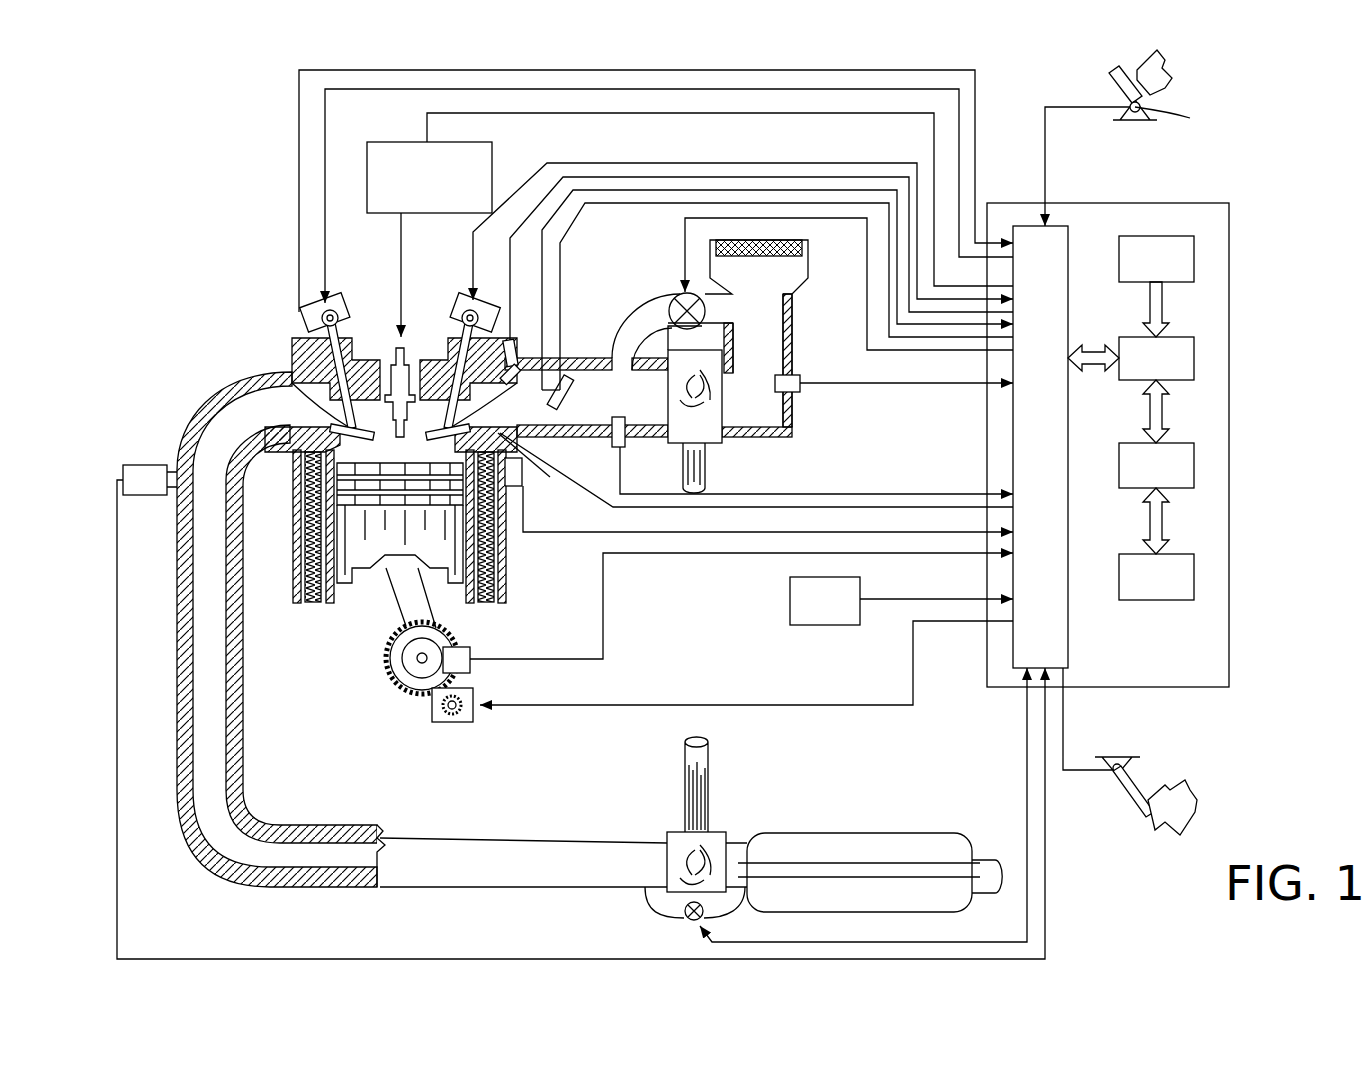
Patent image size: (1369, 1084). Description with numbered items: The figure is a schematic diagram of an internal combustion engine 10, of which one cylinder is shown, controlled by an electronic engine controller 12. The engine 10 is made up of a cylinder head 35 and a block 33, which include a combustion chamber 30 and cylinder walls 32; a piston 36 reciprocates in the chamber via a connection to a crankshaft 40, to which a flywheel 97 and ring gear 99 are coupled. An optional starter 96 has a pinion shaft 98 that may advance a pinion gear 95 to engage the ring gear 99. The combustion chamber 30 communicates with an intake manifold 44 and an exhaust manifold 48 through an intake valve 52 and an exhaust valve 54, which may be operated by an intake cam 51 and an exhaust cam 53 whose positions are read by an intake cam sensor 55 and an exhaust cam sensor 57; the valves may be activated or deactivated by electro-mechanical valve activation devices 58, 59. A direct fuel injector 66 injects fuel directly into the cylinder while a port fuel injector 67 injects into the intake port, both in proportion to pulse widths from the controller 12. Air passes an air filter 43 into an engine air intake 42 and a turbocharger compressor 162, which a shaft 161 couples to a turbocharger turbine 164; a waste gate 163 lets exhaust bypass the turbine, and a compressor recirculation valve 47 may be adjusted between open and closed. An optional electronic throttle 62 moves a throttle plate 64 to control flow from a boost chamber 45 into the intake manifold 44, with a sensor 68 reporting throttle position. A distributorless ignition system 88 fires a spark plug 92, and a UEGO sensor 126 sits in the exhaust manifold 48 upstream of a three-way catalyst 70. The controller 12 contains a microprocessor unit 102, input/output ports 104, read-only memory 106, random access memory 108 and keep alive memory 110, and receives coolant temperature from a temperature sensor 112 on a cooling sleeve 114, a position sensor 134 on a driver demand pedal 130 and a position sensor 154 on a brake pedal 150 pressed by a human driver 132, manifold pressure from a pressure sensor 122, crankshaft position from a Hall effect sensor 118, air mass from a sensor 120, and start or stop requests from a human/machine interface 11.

The internal combustion engine 10 is at (547, 514).
The human/machine interface 11 is at (901, 601).
The electronic engine controller 12 is at (1059, 427).
The combustion chamber 30 is at (420, 539).
The cylinder walls 32 is at (342, 612).
The block 33 is at (290, 508).
The cylinder head 35 is at (288, 337).
The piston 36 is at (380, 590).
The crankshaft 40 is at (393, 682).
The engine air intake 42 is at (791, 327).
The air filter 43 is at (775, 257).
The intake manifold 44 is at (586, 384).
The boost chamber 45 is at (592, 411).
The compressor recirculation valve 47 is at (676, 300).
The exhaust manifold 48 is at (422, 629).
The intake cam 51 is at (470, 306).
The intake valve 52 is at (712, 301).
The exhaust cam 53 is at (669, 196).
The exhaust valve 54 is at (628, 264).
The intake cam sensor 55 is at (477, 309).
The exhaust cam sensor 57 is at (318, 299).
The valve activation device 58 is at (338, 320).
The valve activation device 59 is at (464, 322).
The electronic throttle 62 is at (566, 402).
The throttle plate 64 is at (565, 409).
The direct fuel injector 66 is at (521, 466).
The port fuel injector 67 is at (758, 272).
The throttle position sensor 68 is at (562, 364).
The three-way catalyst 70 is at (790, 833).
The distributorless ignition system 88 is at (492, 160).
The spark plug 92 is at (406, 345).
The pinion gear 95 is at (455, 722).
The starter 96 is at (702, 695).
The flywheel 97 is at (400, 668).
The pinion shaft 98 is at (443, 718).
The ring gear 99 is at (408, 702).
The microprocessor unit 102 is at (1194, 358).
The input/output ports 104 is at (1068, 235).
The read-only memory 106 is at (1194, 258).
The random access memory 108 is at (1194, 465).
The keep alive memory 110 is at (1194, 575).
The temperature sensor 112 is at (515, 487).
The cooling sleeve 114 is at (490, 575).
The Hall effect sensor 118 is at (470, 652).
The air mass sensor 120 is at (800, 383).
The pressure sensor 122 is at (612, 445).
The Universal Exhaust Gas Oxygen sensor 126 is at (123, 468).
The driver demand pedal 130 is at (1172, 132).
The human driver 132 is at (1170, 80).
The position sensor 134 is at (1190, 118).
The brake pedal 150 is at (1108, 758).
The position sensor 154 is at (1098, 763).
The shaft 161 is at (683, 470).
The turbocharger compressor 162 is at (710, 440).
The waste gate 163 is at (686, 918).
The turbocharger turbine 164 is at (667, 832).